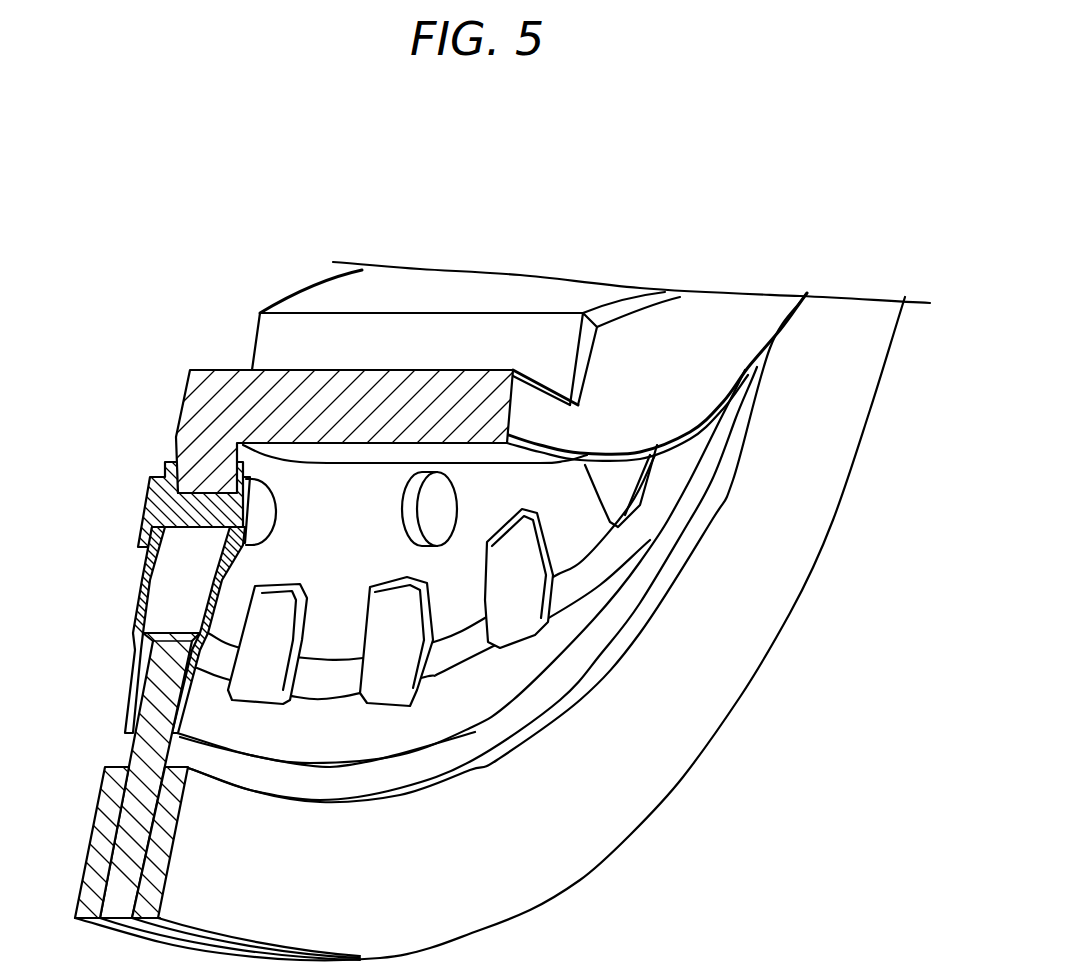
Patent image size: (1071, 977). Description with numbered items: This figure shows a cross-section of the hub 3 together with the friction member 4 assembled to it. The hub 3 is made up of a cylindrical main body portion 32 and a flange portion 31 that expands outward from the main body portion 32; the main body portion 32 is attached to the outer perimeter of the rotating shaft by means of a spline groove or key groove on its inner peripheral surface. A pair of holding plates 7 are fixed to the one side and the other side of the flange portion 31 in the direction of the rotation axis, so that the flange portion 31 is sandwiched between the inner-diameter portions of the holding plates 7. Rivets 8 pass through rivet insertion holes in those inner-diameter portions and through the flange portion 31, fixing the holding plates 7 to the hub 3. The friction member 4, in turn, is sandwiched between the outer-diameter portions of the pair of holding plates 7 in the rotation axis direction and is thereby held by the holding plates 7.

The hub 3 is at (185, 367).
The flange portion 31 is at (170, 438).
The main body portion 32 is at (513, 367).
The rivets 8 is at (430, 483).
The holding plates 7 is at (135, 671).
The friction member 4 is at (135, 793).